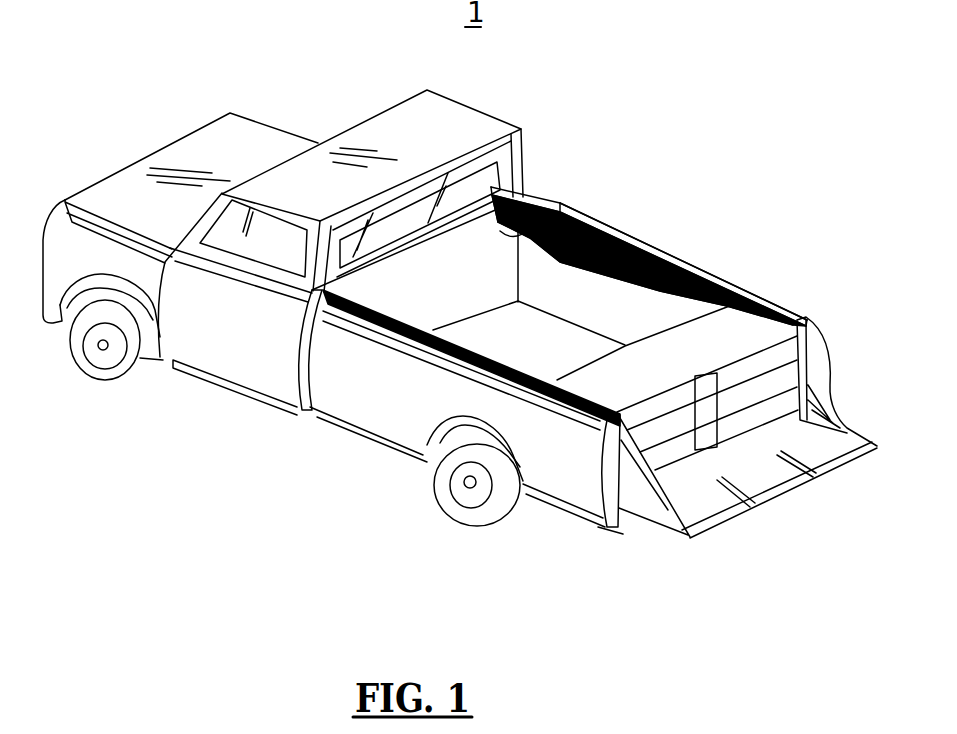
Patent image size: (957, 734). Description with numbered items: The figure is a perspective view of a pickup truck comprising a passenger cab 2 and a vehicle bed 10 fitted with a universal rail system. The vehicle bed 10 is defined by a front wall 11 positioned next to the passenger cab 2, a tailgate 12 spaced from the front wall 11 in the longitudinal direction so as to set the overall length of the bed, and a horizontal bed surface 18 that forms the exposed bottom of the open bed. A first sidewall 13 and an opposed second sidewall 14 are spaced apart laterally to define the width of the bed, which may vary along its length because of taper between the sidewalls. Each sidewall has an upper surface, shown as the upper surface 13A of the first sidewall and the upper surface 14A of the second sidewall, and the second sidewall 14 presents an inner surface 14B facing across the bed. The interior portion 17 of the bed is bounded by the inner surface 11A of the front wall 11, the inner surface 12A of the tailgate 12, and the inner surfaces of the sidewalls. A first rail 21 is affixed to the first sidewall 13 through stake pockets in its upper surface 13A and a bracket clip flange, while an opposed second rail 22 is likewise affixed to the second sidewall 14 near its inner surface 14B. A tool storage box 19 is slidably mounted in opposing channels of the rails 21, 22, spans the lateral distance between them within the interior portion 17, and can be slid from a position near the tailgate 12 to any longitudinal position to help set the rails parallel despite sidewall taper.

The passenger cab 2 is at (457, 117).
The vehicle bed 10 is at (584, 178).
The front wall 11 is at (482, 222).
The inner surface of the front wall 11A is at (580, 215).
The tailgate 12 is at (730, 519).
The inner surface of the tailgate 12A is at (752, 466).
The first sidewall 13 is at (303, 406).
The upper surface of the first sidewall 13A is at (407, 338).
The second sidewall 14 is at (653, 246).
The upper surface of the second sidewall 14A is at (673, 258).
The inner surface of the second sidewall 14B is at (684, 313).
The interior portion 17 is at (567, 302).
The horizontal bed surface 18 is at (485, 333).
The tool storage box 19 is at (750, 342).
The first rail 21 is at (407, 338).
The second rail 22 is at (627, 247).